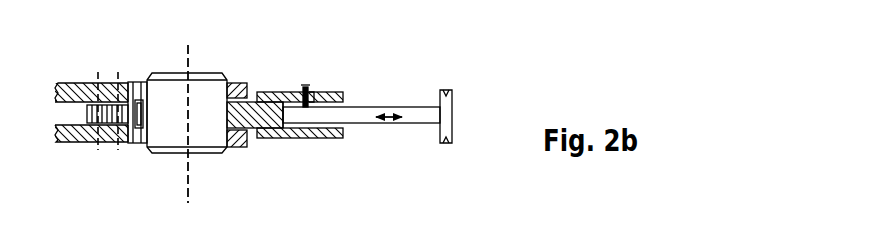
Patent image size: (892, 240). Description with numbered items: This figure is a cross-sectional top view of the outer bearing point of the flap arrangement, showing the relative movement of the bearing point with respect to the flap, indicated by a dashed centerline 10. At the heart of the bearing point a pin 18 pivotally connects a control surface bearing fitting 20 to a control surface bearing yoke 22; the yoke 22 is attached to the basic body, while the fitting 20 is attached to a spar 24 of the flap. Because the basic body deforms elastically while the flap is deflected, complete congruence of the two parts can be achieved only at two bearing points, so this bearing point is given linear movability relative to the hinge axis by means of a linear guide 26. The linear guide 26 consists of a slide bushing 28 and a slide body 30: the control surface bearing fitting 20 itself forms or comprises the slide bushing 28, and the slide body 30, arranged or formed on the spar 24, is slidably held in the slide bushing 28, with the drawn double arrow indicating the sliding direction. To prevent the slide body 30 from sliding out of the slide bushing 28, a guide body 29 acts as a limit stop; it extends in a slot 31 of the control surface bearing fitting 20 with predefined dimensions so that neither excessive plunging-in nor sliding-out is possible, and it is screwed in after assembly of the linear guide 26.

The axis / centerline of device 10 is at (187, 72).
The pin 18 is at (198, 93).
The control surface bearing fitting 20 is at (285, 92).
The control surface bearing yoke 22 is at (105, 125).
The spar 24 is at (450, 97).
The linear guide 26 is at (359, 87).
The slide bushing 28 is at (270, 112).
The guide body 29 is at (305, 85).
The slide body 30 is at (398, 107).
The slot 31 is at (313, 92).